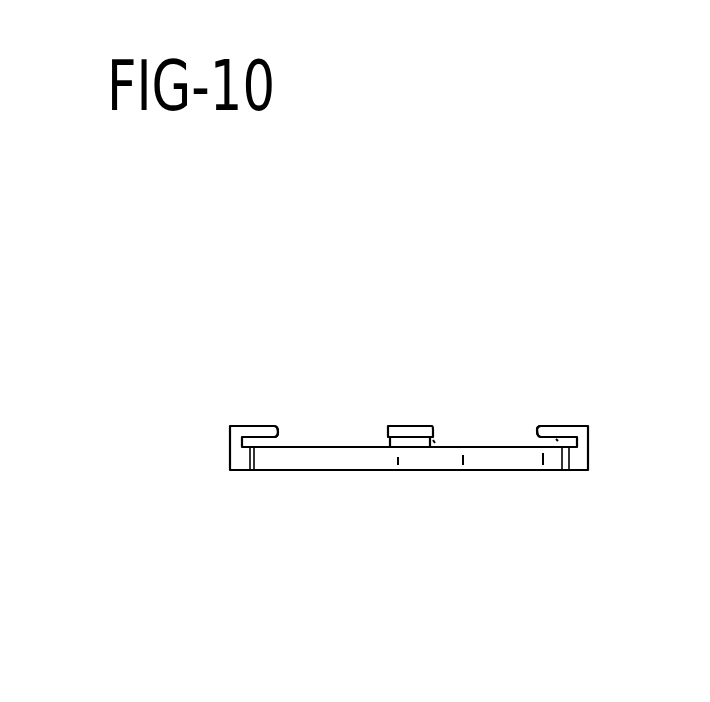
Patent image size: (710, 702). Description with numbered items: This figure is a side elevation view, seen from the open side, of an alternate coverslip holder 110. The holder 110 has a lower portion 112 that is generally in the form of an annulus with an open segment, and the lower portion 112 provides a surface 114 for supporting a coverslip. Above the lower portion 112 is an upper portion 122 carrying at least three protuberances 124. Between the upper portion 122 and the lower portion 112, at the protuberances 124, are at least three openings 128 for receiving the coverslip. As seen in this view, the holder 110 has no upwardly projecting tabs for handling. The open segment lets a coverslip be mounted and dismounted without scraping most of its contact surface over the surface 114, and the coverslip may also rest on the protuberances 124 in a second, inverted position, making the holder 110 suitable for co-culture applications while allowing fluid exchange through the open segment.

The holder 110 is at (233, 360).
The lower portion 112 is at (267, 458).
The surface 114 is at (338, 447).
The upper portion 122 is at (589, 444).
The protuberances 124 is at (265, 426).
The openings 128 is at (435, 442).